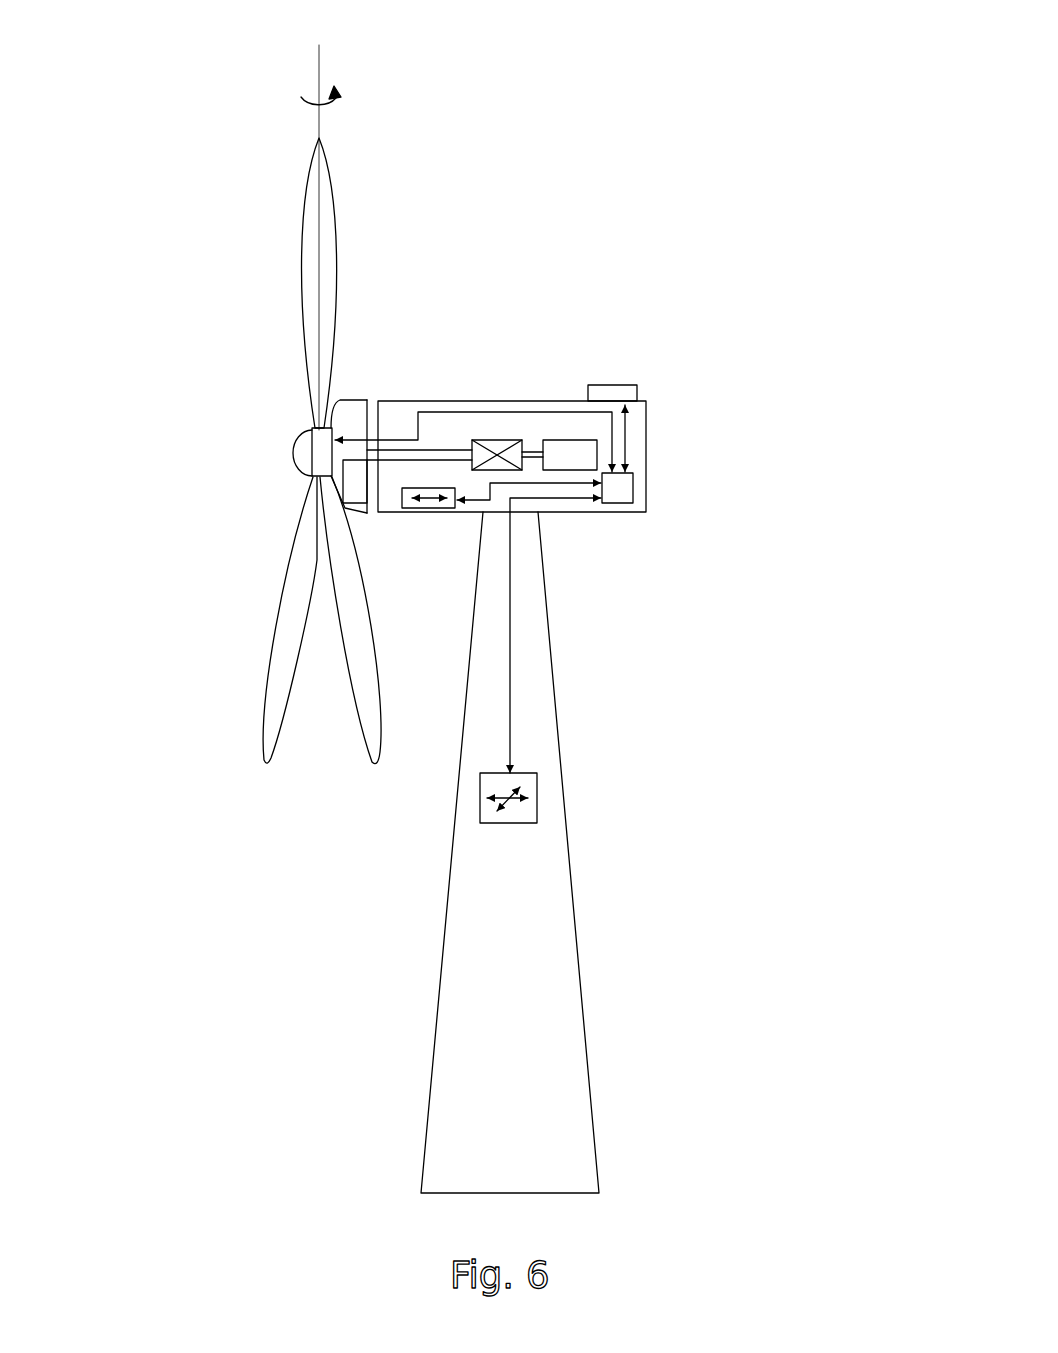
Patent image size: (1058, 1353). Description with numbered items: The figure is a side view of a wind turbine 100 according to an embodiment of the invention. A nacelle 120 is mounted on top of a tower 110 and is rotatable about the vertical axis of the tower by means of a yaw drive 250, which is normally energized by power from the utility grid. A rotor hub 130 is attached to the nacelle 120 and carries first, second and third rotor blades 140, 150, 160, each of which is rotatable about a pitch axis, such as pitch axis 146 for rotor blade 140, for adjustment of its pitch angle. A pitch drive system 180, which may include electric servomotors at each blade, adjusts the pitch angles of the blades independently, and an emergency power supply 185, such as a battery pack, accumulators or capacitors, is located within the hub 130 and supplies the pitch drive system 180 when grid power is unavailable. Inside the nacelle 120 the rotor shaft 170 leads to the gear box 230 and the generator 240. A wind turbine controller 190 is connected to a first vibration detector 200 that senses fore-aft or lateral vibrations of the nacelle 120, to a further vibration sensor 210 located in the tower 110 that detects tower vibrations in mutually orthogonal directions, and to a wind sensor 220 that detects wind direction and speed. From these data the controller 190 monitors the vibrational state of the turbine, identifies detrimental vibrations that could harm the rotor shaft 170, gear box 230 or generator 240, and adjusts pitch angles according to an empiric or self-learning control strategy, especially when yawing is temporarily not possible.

The wind turbine 100 is at (850, 43).
The tower 110 is at (555, 993).
The nacelle 120 is at (648, 413).
The rotor hub 130 is at (340, 412).
The first rotor blade 140 is at (312, 360).
The pitch axis 146 is at (318, 76).
The second rotor blade 150 is at (358, 682).
The third rotor blade 160 is at (290, 652).
The rotor shaft 170 is at (462, 437).
The pitch drive system 180 is at (316, 462).
The emergency power supply 185 is at (343, 505).
The wind turbine controller 190 is at (634, 492).
The first vibration detector 200 is at (430, 510).
The vibration sensor 210 is at (537, 815).
The wind sensor 220 is at (620, 384).
The gear box 230 is at (500, 437).
The generator 240 is at (565, 468).
The yaw drive 250 is at (490, 518).